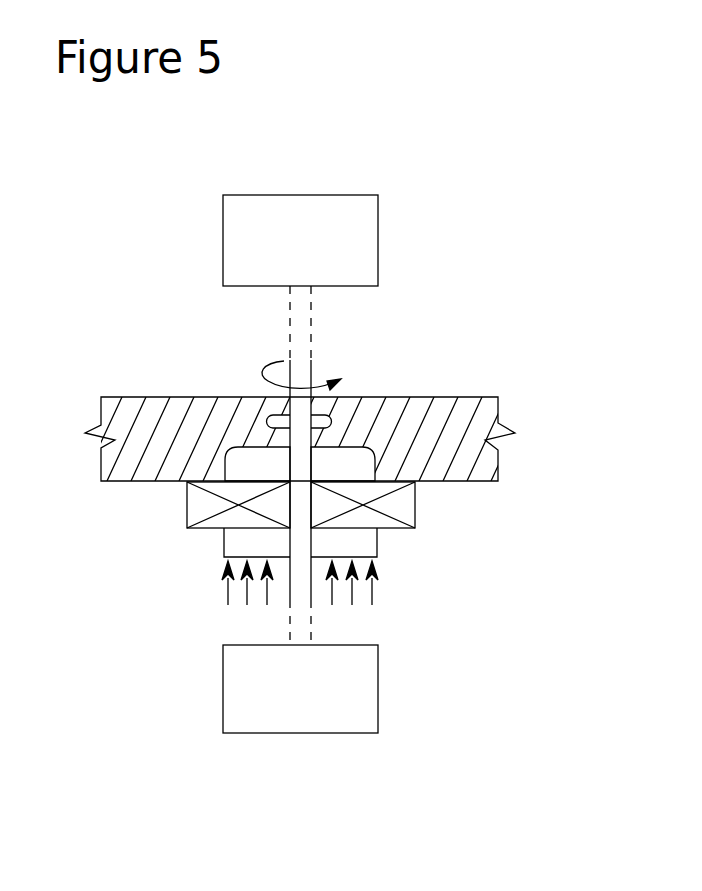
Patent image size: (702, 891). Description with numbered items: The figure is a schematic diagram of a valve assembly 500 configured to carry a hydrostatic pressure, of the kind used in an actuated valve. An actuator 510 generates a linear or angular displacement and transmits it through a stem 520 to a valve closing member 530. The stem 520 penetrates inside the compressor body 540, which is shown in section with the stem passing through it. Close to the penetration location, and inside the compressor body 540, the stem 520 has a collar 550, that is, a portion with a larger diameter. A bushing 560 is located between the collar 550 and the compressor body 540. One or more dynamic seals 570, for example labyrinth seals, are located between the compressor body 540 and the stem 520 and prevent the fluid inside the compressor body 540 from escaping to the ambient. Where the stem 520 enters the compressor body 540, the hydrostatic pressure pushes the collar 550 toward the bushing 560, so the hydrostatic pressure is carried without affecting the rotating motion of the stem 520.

The valve assembly 500 is at (465, 105).
The actuator 510 is at (363, 239).
The stem 520 is at (306, 377).
The valve closing member 530 is at (365, 688).
The compressor body 540 is at (462, 397).
The collar 550 is at (235, 543).
The bushing 560 is at (402, 503).
The dynamic seals 570 is at (322, 417).